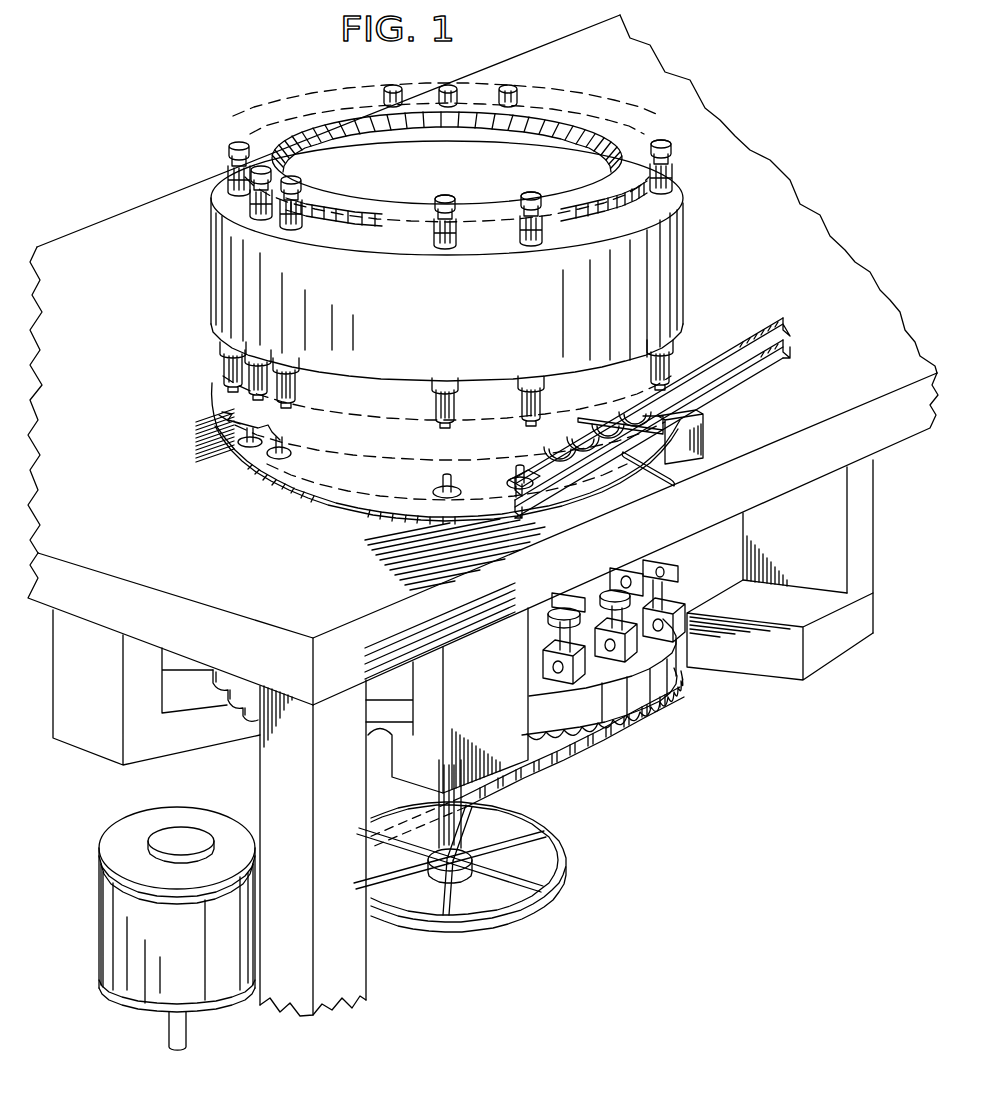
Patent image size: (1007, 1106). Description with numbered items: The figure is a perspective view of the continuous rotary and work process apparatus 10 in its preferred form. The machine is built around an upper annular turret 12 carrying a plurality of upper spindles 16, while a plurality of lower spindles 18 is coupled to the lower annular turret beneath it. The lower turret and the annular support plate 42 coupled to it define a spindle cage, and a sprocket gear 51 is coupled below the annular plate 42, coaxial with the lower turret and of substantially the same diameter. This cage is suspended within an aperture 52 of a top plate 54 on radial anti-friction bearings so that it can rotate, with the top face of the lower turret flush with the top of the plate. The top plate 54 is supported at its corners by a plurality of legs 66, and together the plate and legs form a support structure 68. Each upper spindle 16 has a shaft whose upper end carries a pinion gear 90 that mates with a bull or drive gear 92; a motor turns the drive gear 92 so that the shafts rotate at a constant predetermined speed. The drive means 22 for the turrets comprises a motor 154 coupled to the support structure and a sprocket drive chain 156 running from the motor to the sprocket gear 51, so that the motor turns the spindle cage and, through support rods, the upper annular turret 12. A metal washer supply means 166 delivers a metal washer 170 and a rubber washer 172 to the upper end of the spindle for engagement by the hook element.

The continuous rotary and work process apparatus 10 is at (791, 163).
The upper annular turret 12 is at (652, 270).
The spindles 16 is at (293, 182).
The spindles 18 is at (663, 600).
The drive means 22 is at (556, 773).
The annular support plate 42 is at (633, 697).
The sprocket gear 51 is at (238, 706).
The aperture 52 is at (331, 497).
The top plate 54 is at (847, 257).
The legs 66 is at (340, 971).
The support structure 68 is at (151, 673).
The pinion gear 90 is at (670, 155).
The bull or drive gear 92 is at (612, 204).
The motor 154 is at (142, 830).
The sprocket drive chain 156 is at (524, 780).
The metal washer supply means 166 is at (711, 414).
The metal washer 170 is at (528, 493).
The rubber washer 172 is at (586, 465).